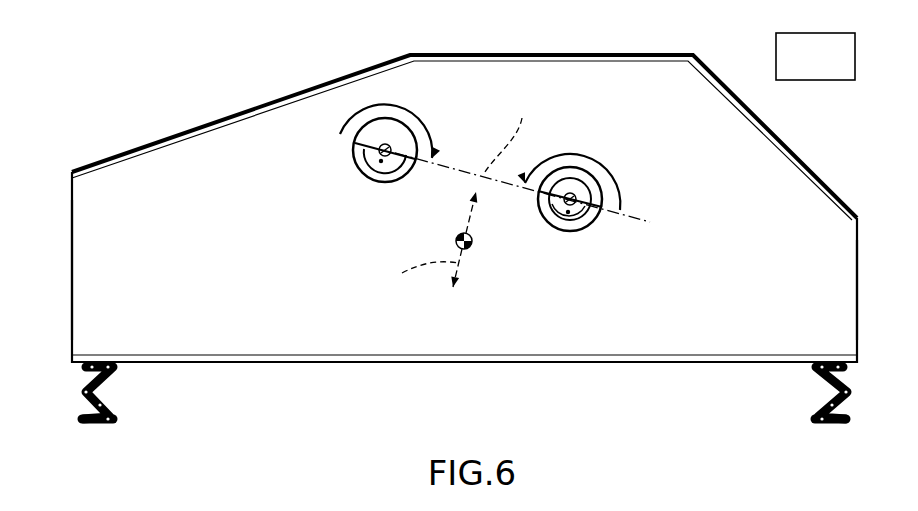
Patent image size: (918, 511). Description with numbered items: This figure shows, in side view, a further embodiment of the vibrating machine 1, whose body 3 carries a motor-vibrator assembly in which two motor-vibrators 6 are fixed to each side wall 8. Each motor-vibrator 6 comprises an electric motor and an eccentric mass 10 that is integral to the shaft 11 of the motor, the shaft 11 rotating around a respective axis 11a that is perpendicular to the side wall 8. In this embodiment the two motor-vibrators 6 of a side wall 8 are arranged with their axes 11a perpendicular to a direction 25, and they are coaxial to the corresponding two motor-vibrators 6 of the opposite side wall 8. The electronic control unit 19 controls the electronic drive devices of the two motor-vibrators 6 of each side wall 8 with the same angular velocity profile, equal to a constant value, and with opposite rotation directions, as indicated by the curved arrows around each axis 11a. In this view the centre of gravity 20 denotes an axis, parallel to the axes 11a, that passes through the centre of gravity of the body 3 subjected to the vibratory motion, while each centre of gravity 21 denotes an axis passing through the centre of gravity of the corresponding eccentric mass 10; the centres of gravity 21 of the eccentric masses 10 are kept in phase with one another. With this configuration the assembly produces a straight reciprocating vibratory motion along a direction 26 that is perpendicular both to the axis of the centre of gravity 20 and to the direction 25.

The vibrating machine 1 is at (150, 102).
The body 3 is at (63, 270).
The motor-vibrator 6 is at (365, 187).
The side wall 8 is at (837, 292).
The eccentric mass 10 is at (367, 157).
The shaft 11 is at (385, 150).
The axis 11a is at (397, 140).
The electronic control unit 19 is at (804, 73).
The centre of gravity of the body 20 is at (470, 246).
The centre of gravity of the eccentric mass 21 is at (381, 163).
The direction 25 is at (510, 134).
The direction 26 is at (417, 277).